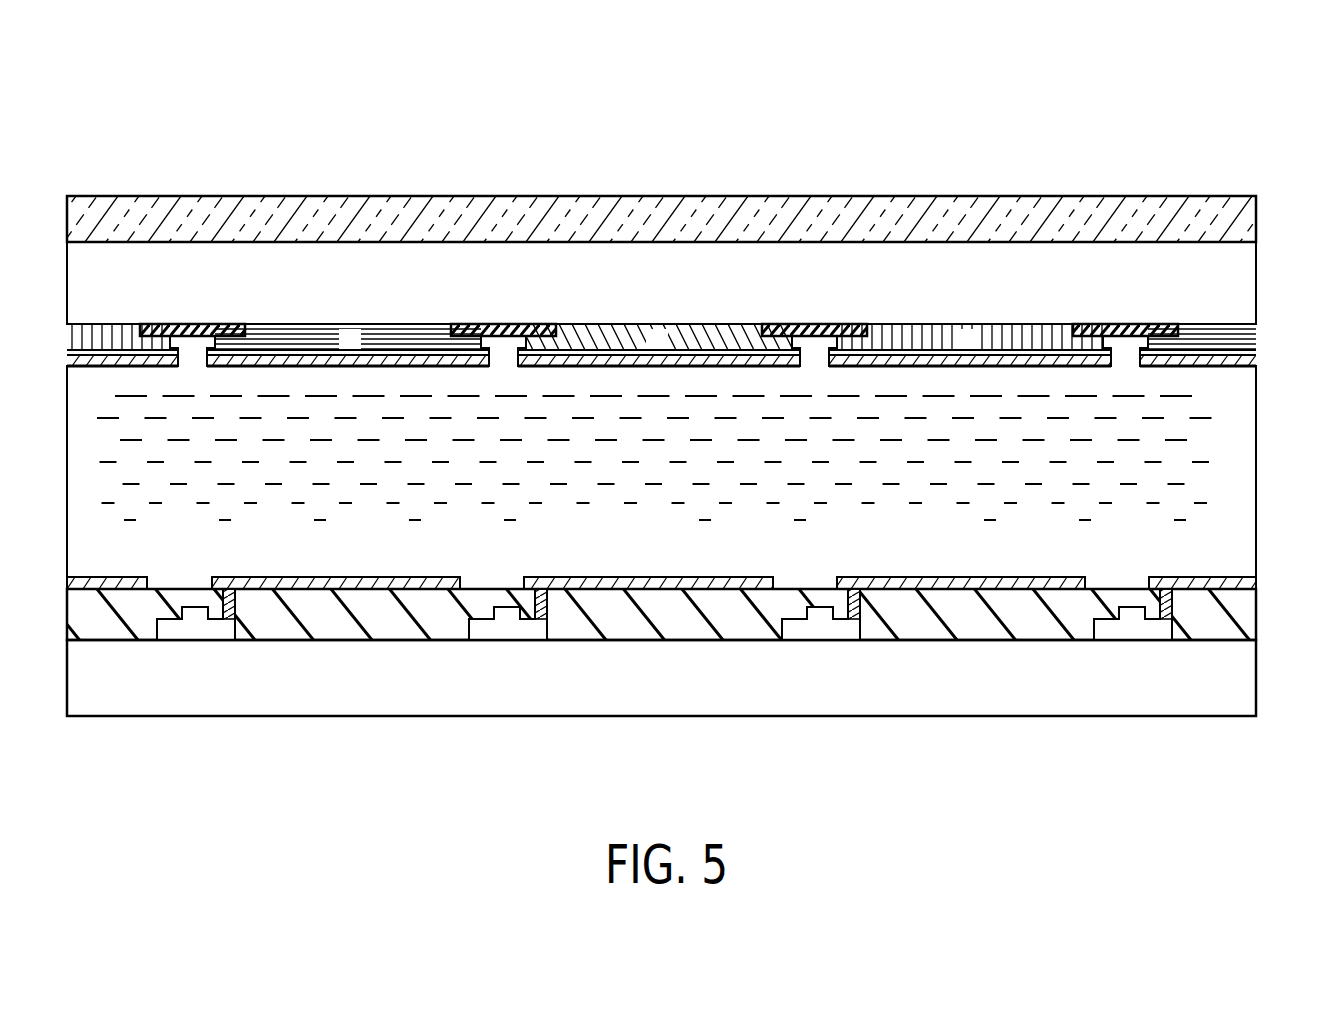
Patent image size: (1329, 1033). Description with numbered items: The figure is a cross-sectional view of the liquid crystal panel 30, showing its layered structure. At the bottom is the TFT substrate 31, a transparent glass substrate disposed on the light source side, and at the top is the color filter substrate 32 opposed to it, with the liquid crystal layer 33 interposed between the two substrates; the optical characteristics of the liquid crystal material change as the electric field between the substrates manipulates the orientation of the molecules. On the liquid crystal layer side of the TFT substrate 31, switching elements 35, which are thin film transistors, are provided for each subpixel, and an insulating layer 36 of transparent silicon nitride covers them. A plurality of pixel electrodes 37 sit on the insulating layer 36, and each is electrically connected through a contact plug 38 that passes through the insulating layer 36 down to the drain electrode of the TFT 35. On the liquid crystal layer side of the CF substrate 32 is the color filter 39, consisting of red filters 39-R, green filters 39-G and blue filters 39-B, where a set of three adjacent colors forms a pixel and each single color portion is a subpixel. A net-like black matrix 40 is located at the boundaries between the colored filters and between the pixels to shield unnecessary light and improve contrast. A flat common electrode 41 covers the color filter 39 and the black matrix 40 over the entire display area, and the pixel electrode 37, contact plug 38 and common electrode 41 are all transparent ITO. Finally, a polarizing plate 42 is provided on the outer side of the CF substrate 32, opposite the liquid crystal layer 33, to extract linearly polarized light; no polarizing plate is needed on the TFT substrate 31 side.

The liquid crystal panel 30 is at (674, 392).
The TFT substrate 31 is at (1248, 684).
The color filter substrate 32 is at (1248, 283).
The liquid crystal layer 33 is at (1248, 446).
The switching element 35 is at (804, 633).
The insulating layer 36 is at (1248, 618).
The pixel electrode 37 is at (962, 591).
The contact plug 38 is at (861, 618).
The color filter 39 is at (661, 216).
The red filter 39-R is at (317, 336).
The green filter 39-G is at (626, 336).
The blue filter 39-B is at (935, 336).
The black matrix 40 is at (1124, 334).
The common electrode 41 is at (1248, 356).
The polarizing plate 42 is at (1250, 214).